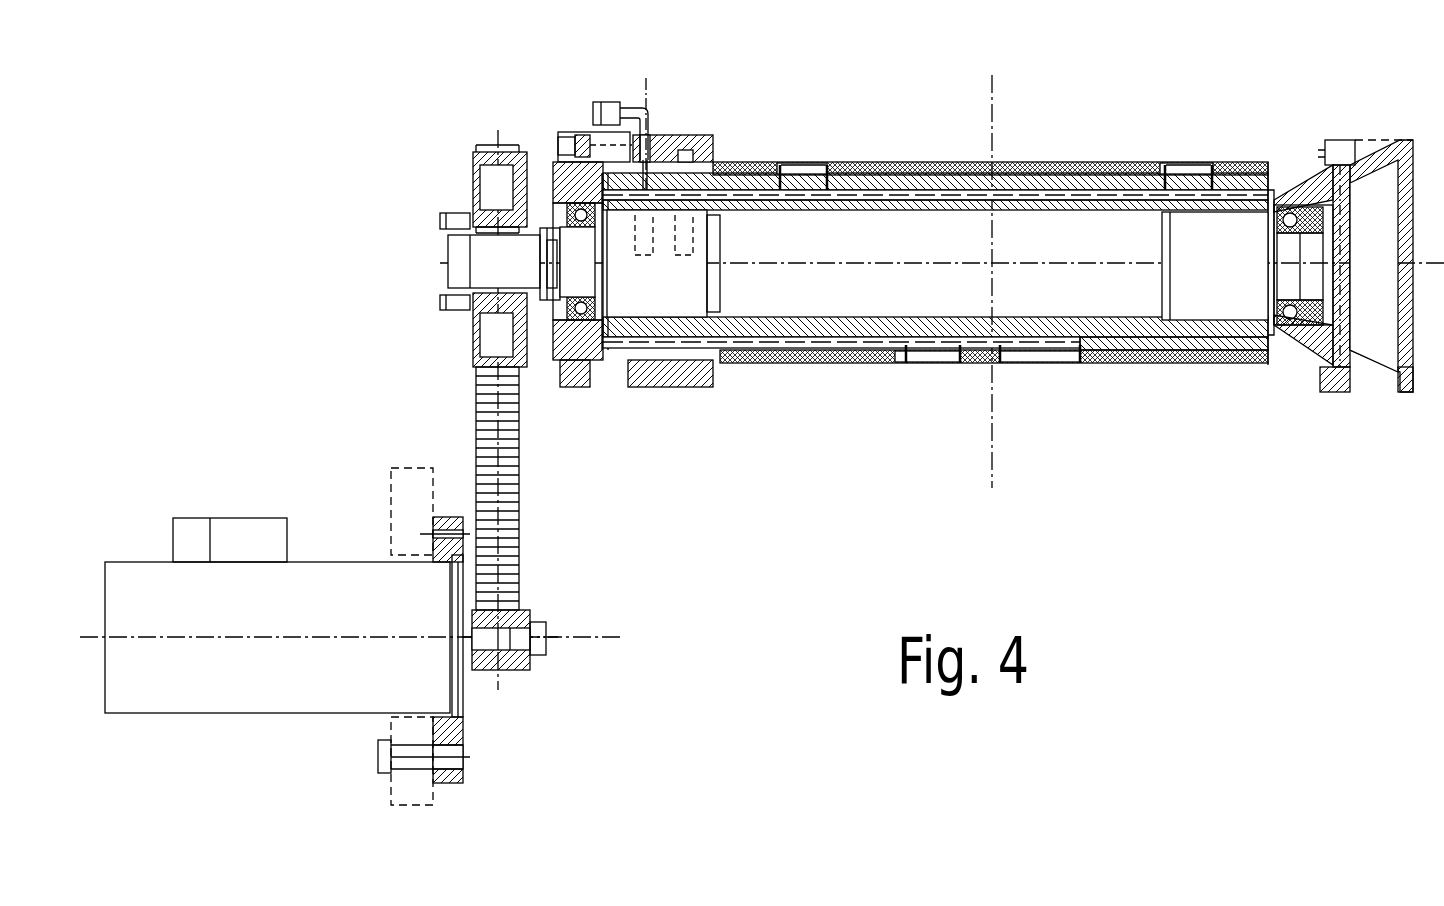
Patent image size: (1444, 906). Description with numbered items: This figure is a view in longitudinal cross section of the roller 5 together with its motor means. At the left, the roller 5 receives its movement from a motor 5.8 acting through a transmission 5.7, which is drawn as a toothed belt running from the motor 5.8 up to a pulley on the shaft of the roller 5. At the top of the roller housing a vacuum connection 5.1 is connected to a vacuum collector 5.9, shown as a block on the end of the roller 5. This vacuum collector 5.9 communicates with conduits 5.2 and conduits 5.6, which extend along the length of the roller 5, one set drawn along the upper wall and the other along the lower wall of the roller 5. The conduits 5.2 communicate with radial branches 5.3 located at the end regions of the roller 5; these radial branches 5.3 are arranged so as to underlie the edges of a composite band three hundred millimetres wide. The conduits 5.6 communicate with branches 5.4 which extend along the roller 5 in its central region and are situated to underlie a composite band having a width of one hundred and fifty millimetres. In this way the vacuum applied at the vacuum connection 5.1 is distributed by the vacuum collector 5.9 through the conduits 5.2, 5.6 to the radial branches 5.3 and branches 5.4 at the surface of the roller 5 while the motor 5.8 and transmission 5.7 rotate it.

The roller 5 is at (1027, 122).
The vacuum connection 5.1 is at (611, 107).
The conduits 5.2 is at (762, 167).
The radial branches 5.3 is at (830, 165).
The branches 5.4 is at (960, 362).
The conduits 5.6 is at (781, 345).
The transmission 5.7 is at (510, 506).
The motor 5.8 is at (277, 615).
The vacuum collector 5.9 is at (678, 145).